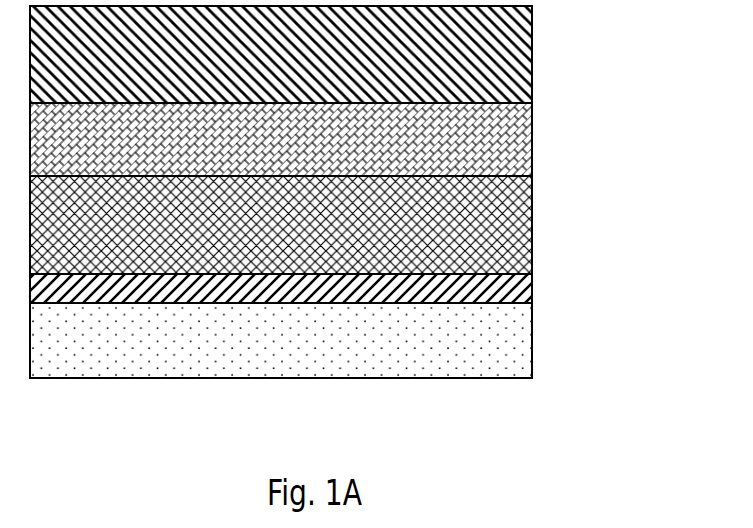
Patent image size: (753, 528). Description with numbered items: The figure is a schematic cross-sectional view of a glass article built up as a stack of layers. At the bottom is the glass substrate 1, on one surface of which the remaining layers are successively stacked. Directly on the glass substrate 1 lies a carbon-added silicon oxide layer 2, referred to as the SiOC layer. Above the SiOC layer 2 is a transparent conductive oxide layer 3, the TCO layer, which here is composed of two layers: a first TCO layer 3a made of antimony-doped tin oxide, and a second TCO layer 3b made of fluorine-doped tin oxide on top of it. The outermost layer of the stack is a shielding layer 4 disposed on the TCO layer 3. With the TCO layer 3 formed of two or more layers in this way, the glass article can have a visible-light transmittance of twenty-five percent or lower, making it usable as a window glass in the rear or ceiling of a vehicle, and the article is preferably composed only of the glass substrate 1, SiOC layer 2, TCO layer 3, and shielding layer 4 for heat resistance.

The glass substrate 1 is at (532, 343).
The carbon-added silicon oxide layer 2 is at (532, 285).
The transparent conductive oxide layer 3 is at (362, 188).
The first TCO layer 3a is at (532, 222).
The second TCO layer 3b is at (532, 138).
The shielding layer 4 is at (532, 52).